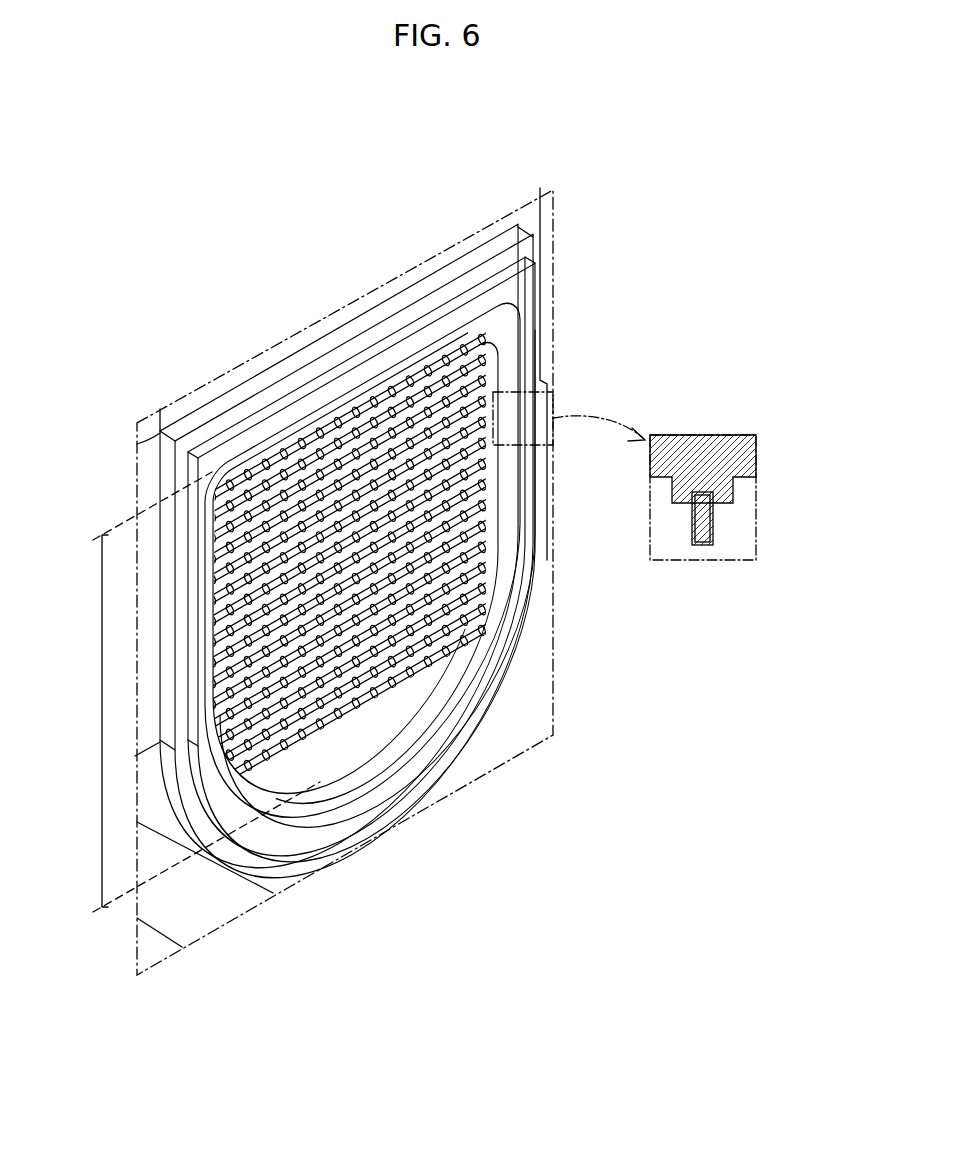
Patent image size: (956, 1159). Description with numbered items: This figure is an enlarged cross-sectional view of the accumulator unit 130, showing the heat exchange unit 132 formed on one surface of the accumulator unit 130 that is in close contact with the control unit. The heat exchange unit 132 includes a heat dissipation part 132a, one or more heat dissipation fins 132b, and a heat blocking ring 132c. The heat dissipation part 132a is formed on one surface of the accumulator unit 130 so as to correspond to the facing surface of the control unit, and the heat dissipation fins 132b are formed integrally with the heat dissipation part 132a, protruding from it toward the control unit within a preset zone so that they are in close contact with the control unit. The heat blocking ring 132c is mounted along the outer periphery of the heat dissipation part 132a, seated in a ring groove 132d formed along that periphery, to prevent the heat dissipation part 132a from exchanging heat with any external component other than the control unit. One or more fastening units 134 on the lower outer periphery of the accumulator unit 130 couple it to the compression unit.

The accumulator unit 130 is at (323, 330).
The heat exchange unit 132 is at (471, 236).
The heat dissipation part 132a is at (190, 692).
The heat dissipation fins 132b is at (463, 600).
The heat blocking ring 132c is at (520, 287).
The ring groove 132d is at (709, 508).
The fastening units 134 is at (213, 912).